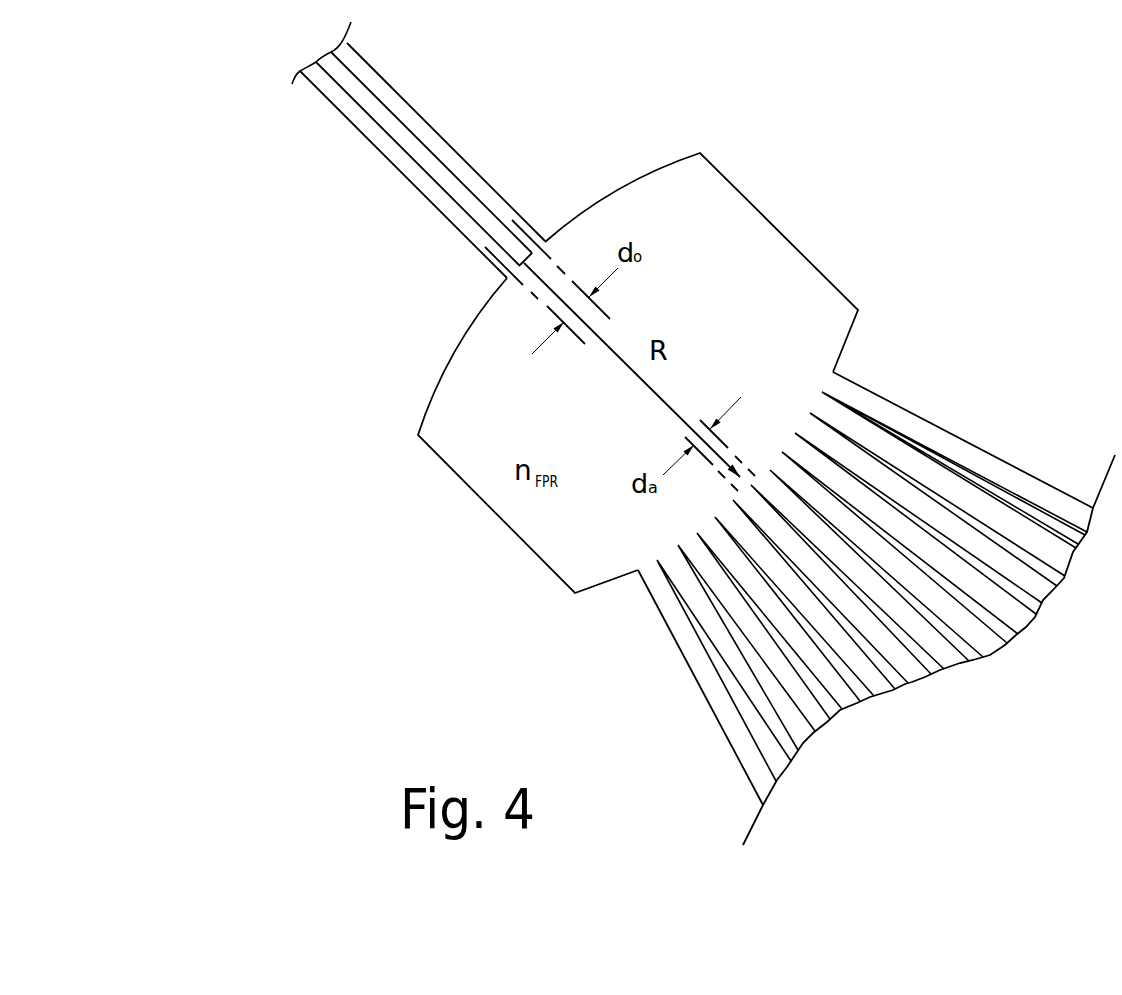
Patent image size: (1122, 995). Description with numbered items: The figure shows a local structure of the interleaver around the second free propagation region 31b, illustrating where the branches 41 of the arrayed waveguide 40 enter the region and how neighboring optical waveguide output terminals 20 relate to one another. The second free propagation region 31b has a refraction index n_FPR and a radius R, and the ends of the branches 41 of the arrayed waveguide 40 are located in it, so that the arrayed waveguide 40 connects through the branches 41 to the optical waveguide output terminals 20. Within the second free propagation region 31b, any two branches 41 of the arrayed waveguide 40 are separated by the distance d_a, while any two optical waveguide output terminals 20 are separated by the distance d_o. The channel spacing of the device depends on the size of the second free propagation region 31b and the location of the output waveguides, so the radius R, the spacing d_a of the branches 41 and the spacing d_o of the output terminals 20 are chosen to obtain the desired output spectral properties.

The optical waveguide output terminal 20 is at (413, 120).
The second free propagation region 31b is at (755, 232).
The arrayed waveguide 40 is at (900, 392).
The branches 41 is at (1000, 471).